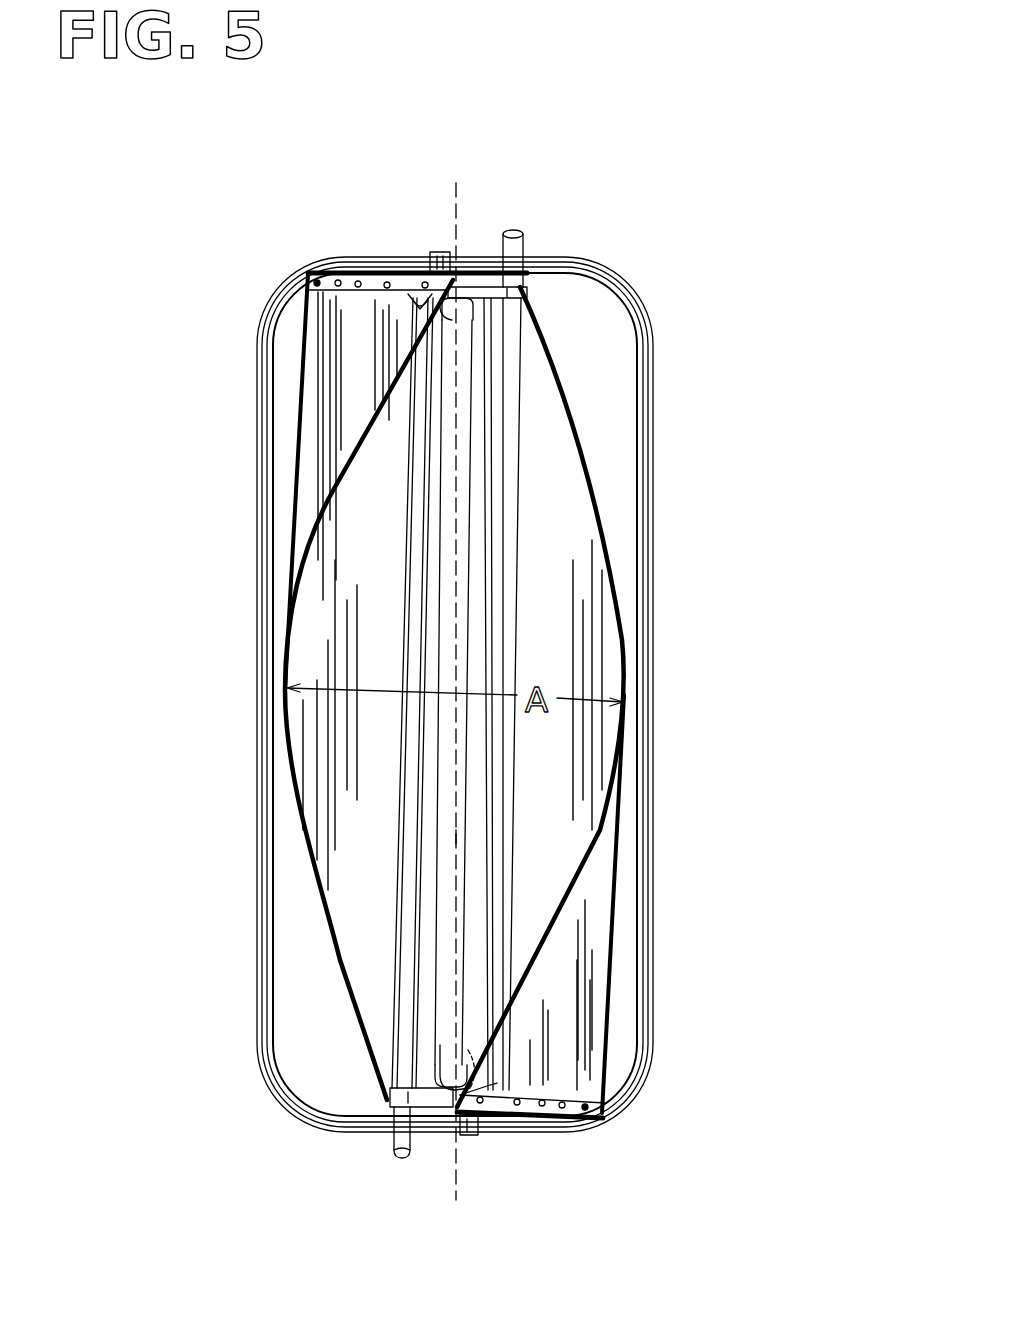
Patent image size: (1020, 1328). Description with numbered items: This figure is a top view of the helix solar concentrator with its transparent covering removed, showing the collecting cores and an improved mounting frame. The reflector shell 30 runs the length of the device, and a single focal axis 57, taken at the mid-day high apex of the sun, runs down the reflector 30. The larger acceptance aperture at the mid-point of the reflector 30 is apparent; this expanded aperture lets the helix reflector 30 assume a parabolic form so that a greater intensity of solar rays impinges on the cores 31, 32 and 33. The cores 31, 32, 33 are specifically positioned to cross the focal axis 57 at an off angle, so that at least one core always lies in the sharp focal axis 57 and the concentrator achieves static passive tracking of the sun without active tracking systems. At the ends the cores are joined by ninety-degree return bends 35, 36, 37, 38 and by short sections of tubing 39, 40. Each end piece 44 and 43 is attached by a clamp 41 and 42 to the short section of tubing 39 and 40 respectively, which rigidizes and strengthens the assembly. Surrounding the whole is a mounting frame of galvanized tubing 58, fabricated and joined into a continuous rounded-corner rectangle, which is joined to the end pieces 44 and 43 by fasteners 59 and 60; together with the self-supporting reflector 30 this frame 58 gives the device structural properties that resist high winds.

The helix reflector 30 is at (323, 353).
The core 31 is at (420, 560).
The core 32 is at (453, 542).
The core 33 is at (503, 620).
The 90 degree return bend 35 is at (440, 1075).
The 90 degree return bend 36 is at (497, 1083).
The 90 degree return bend 37 is at (420, 305).
The 90 degree return bend 38 is at (448, 312).
The short section of tubing 39 is at (450, 1077).
The short section of tubing 40 is at (452, 310).
The clamp 41 is at (440, 1113).
The clamp 42 is at (453, 295).
The end piece 43 is at (597, 1117).
The end piece 44 is at (308, 278).
The focal axis 57 is at (453, 837).
The mounting frame of galvanized tubing 58 is at (262, 800).
The fastener 59 is at (475, 1133).
The fastener 60 is at (440, 253).